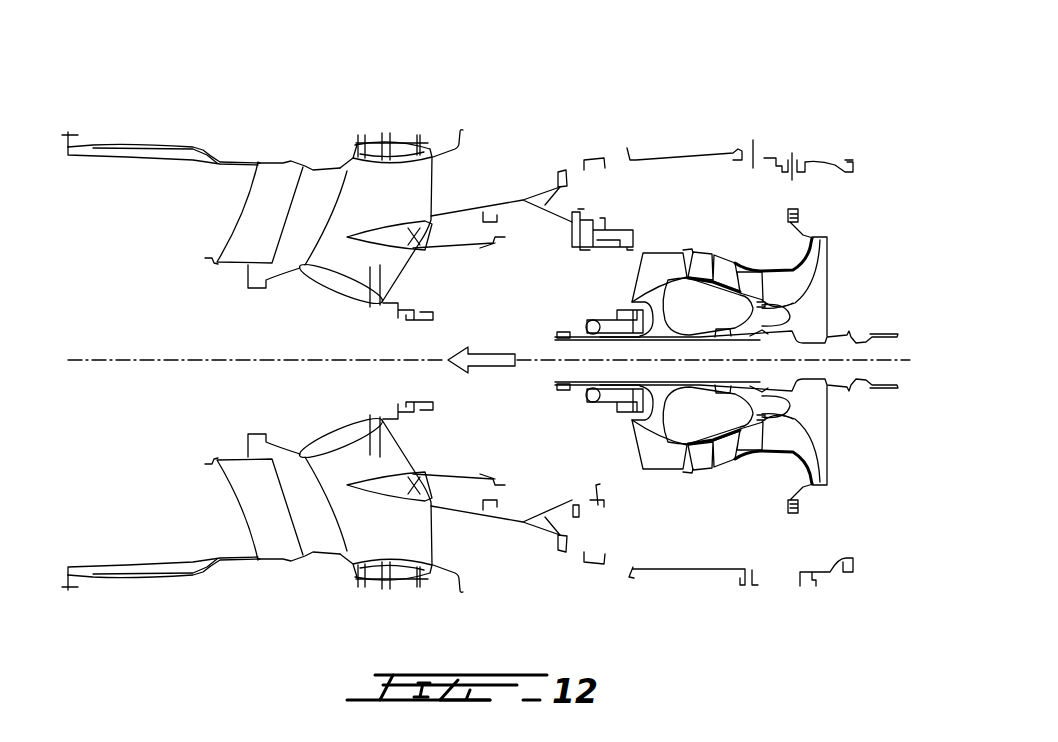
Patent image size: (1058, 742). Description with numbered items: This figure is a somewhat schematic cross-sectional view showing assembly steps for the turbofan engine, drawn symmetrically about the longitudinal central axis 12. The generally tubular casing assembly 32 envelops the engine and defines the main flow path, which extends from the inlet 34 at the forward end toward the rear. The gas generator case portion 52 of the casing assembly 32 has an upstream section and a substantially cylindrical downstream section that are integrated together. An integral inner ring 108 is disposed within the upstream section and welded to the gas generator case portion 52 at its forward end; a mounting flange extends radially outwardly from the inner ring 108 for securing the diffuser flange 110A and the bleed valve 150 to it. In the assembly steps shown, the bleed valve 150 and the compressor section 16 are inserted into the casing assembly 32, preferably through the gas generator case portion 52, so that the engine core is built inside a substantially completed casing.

The longitudinal central axis 12 is at (152, 358).
The compressor section 16 is at (730, 467).
The casing assembly 32 is at (172, 587).
The inlet 34 is at (65, 588).
The gas generator case portion 52 is at (805, 147).
The integral inner ring 108 is at (556, 170).
The diffuser flange 110A is at (810, 220).
The bleed valve 150 is at (615, 220).